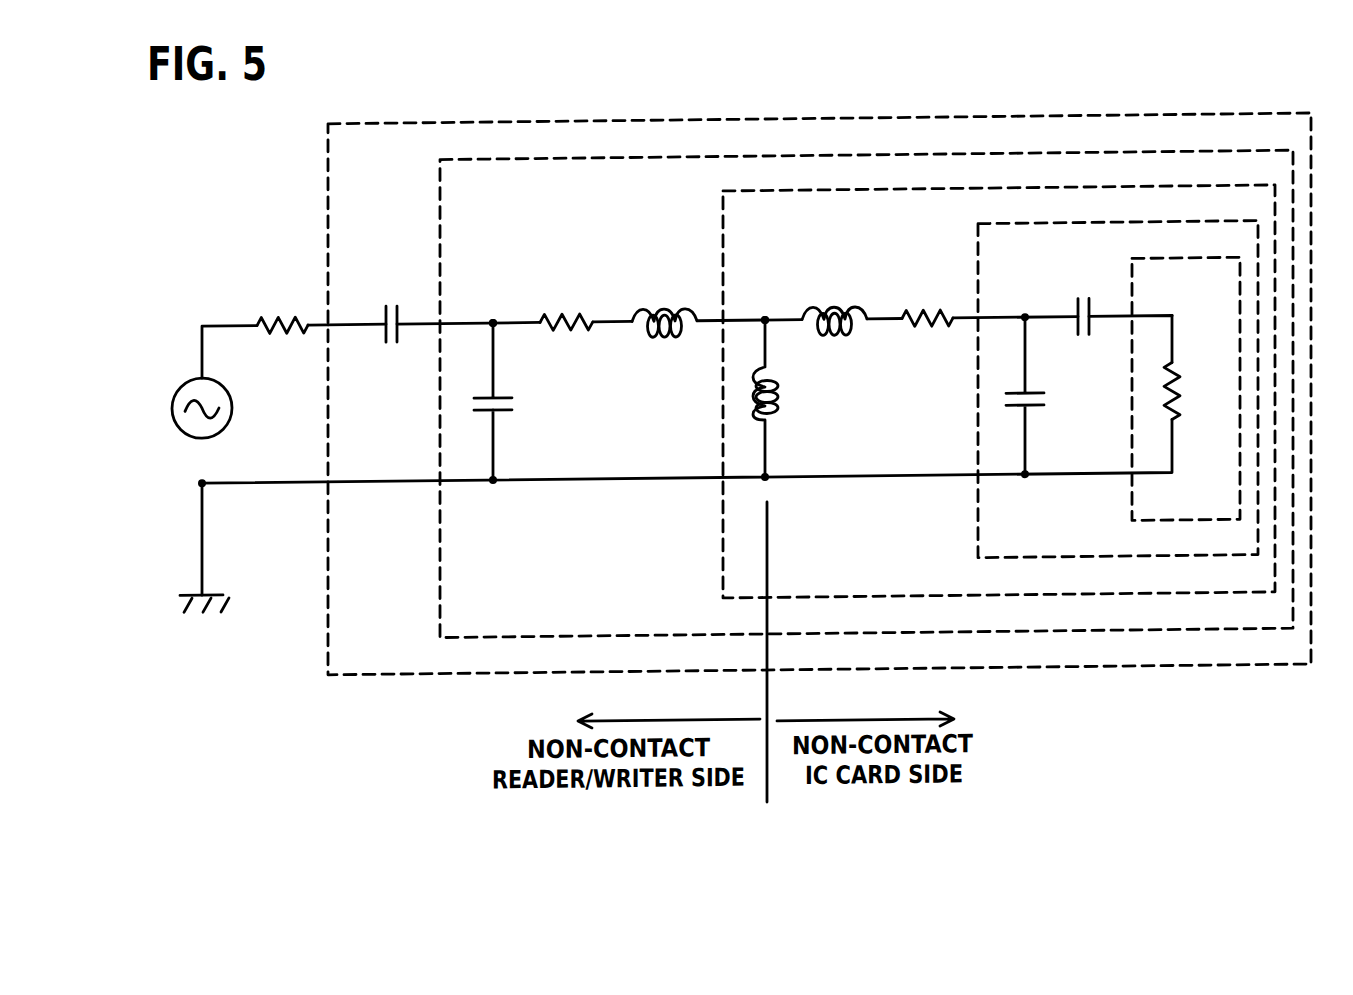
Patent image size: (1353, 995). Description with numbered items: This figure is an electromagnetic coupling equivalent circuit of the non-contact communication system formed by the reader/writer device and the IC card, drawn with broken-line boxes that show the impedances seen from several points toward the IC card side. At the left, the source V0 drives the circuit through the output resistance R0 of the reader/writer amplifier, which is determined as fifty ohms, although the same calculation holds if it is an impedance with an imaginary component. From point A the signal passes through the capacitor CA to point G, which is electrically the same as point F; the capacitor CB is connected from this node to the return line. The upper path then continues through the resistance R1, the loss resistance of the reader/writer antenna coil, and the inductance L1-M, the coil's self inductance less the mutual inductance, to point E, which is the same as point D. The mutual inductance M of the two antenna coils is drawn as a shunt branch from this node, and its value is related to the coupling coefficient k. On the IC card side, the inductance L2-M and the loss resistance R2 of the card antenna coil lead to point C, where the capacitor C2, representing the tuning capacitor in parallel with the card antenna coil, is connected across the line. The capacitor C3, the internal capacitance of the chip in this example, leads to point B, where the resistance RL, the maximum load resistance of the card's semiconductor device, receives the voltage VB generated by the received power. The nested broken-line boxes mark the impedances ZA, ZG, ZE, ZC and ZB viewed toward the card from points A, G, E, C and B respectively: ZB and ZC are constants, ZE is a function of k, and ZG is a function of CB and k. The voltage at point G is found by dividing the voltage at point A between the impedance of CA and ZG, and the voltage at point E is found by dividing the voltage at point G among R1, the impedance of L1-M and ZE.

The signal source V0 is at (184, 408).
The output resistance R0 is at (282, 330).
The capacitor CA is at (392, 314).
The capacitor CB is at (510, 401).
The resistance R1 is at (566, 309).
The inductance L1-M is at (664, 309).
The mutual inductance M is at (779, 399).
The inductance L2-M is at (834, 307).
The resistance R2 is at (927, 304).
The capacitor C2 is at (1041, 396).
The capacitor C3 is at (1083, 306).
The resistance RL is at (1188, 391).
The impedance ZA is at (697, 119).
The impedance ZG is at (815, 156).
The impedance ZE is at (935, 190).
The impedance ZC is at (1052, 226).
The impedance ZB is at (1168, 262).
The point A is at (342, 308).
The point B is at (1174, 301).
The point C is at (1006, 305).
The point D is at (776, 306).
The point E is at (754, 306).
The point F is at (503, 309).
The point G is at (482, 309).